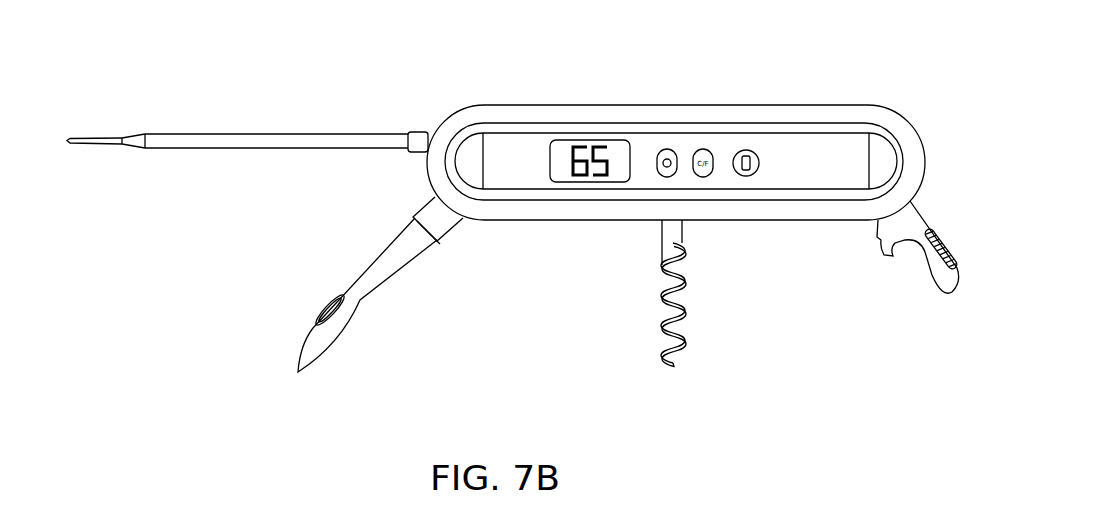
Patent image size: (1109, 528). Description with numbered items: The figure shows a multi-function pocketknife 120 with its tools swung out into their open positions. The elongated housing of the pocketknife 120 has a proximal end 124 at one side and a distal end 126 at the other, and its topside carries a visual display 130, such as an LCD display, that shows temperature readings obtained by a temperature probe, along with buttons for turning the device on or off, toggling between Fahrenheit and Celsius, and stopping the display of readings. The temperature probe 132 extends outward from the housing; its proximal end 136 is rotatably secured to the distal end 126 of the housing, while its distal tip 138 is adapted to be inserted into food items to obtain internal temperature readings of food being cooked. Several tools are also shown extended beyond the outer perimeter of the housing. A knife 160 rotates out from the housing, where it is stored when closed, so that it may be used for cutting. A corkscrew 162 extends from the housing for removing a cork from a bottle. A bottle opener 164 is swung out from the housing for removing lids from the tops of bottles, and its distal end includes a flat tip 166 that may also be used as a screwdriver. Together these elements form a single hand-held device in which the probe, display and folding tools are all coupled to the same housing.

The multi-function pocketknife 120 is at (698, 82).
The proximal end 124 is at (902, 98).
The distal end 126 is at (451, 286).
The visual display 130 is at (585, 140).
The temperature probe 132 is at (255, 136).
The proximal end of temperature probe 136 is at (423, 132).
The distal tip 138 is at (90, 143).
The knife 160 is at (302, 353).
The corkscrew 162 is at (683, 353).
The bottle opener 164 is at (942, 242).
The flat tip 166 is at (948, 283).